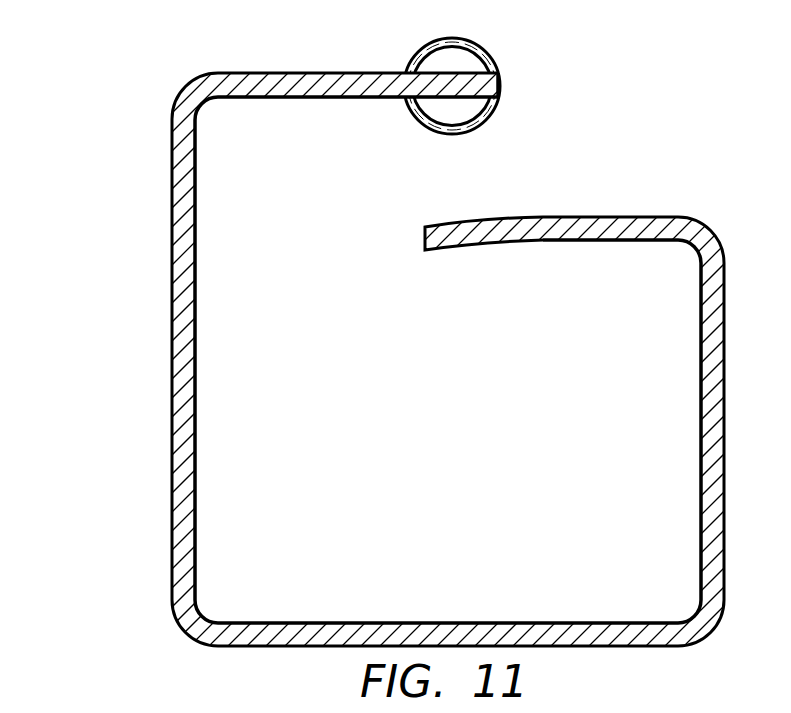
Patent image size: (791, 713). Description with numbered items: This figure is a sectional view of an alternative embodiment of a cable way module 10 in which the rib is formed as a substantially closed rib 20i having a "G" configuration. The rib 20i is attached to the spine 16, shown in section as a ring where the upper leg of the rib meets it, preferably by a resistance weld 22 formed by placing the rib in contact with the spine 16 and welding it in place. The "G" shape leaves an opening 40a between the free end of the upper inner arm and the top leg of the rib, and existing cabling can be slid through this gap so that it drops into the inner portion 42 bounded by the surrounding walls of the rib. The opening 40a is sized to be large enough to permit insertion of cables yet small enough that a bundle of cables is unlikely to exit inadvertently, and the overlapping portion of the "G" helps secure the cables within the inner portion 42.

The cable way module 10 is at (108, 56).
The spine 16 is at (487, 50).
The substantially closed rib 20i is at (222, 73).
The resistance weld 22 is at (405, 73).
The opening 40a is at (464, 166).
The inner portion 42 is at (293, 597).